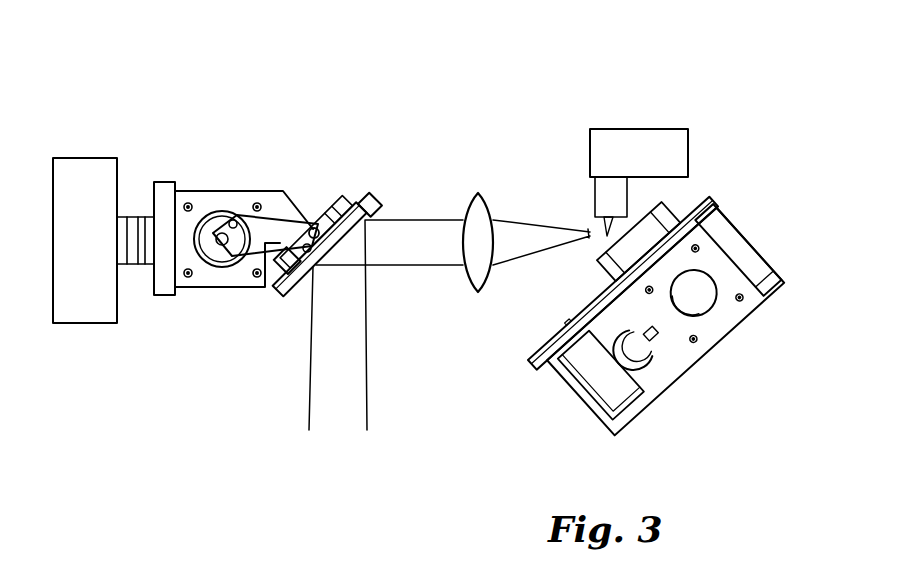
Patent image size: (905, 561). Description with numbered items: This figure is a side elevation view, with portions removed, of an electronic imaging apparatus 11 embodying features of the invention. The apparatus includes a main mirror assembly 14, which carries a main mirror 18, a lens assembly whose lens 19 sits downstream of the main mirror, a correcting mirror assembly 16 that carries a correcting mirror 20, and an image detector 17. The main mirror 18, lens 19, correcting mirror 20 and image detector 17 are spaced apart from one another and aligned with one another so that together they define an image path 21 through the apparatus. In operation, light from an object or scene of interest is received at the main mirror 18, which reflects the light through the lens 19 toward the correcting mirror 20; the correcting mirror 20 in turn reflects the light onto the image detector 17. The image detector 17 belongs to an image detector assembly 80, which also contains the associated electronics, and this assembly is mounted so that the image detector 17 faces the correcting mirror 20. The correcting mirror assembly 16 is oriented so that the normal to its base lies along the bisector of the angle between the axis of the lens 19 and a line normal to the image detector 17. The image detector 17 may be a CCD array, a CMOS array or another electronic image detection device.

The electronic imaging apparatus 11 is at (243, 135).
The main mirror assembly 14 is at (98, 324).
The correcting mirror assembly 16 is at (703, 353).
The image detector 17 is at (590, 222).
The main mirror 18 is at (377, 214).
The lens 19 is at (475, 292).
The correcting mirror 20 is at (625, 217).
The image path 21 is at (390, 268).
The image detector assembly 80 is at (588, 151).